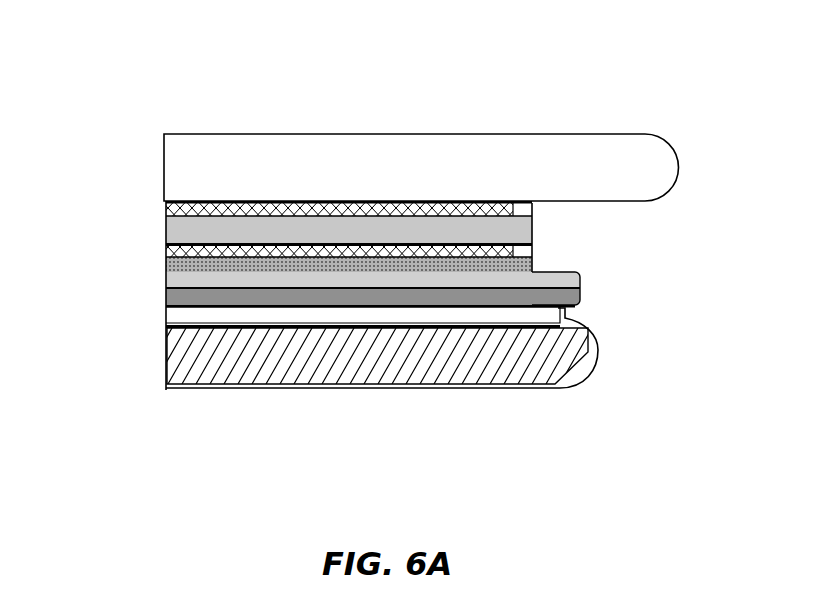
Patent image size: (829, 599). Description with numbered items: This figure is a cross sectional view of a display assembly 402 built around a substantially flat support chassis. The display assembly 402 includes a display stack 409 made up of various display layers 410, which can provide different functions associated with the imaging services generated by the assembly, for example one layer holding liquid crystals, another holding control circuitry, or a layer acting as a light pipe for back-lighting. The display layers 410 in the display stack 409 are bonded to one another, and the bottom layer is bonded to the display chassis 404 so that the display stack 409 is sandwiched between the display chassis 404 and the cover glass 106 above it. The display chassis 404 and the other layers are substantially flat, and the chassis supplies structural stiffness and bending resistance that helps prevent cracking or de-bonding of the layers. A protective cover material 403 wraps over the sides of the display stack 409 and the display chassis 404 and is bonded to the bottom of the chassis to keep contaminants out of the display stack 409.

The display assembly 402 is at (338, 73).
The cover glass 106 is at (443, 178).
The display stack 409 is at (297, 357).
The display layers 410 is at (375, 295).
The display chassis 404 is at (480, 367).
The protective cover material 403 is at (592, 373).